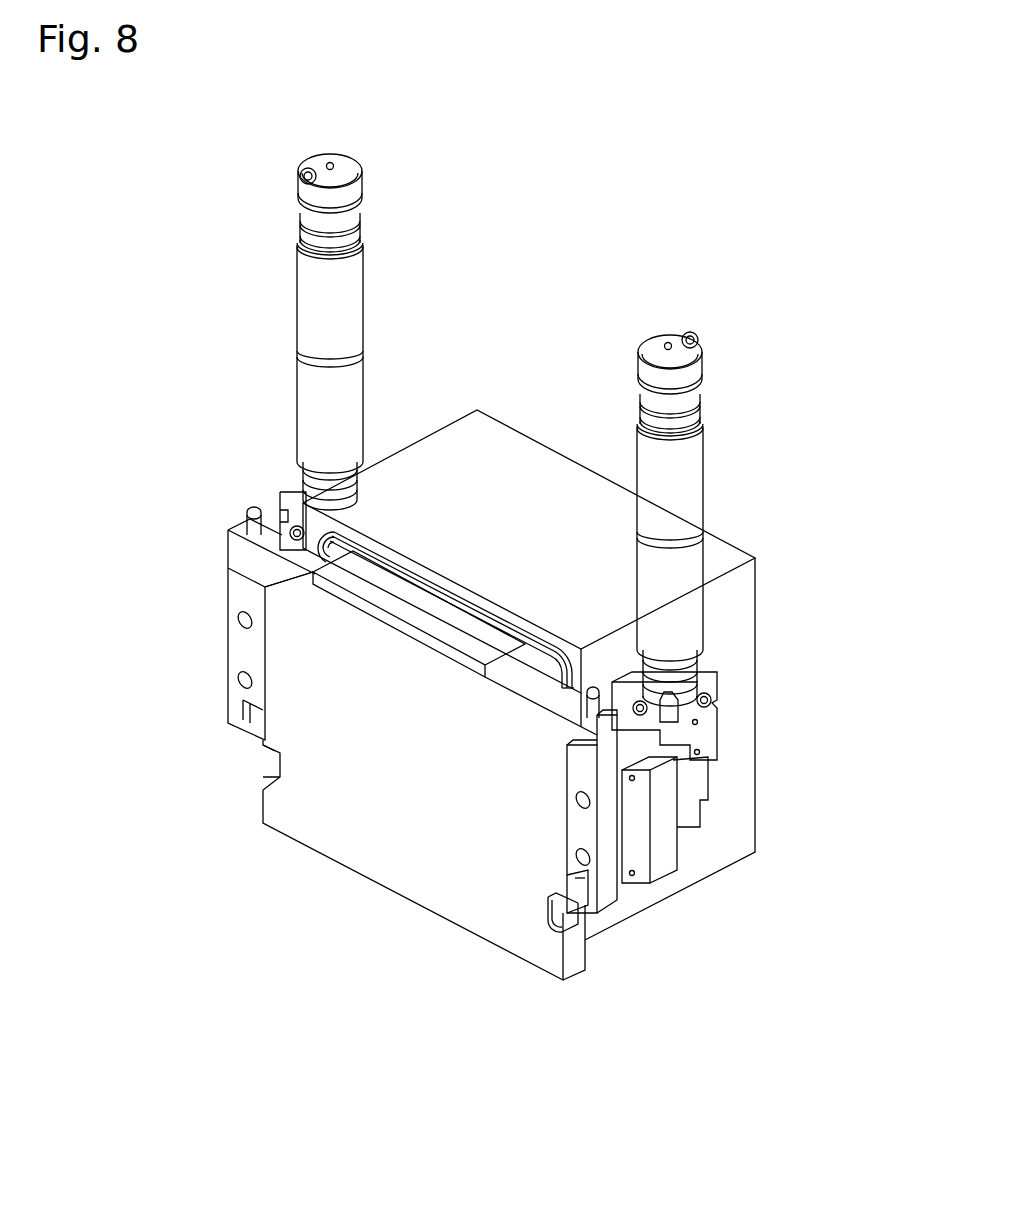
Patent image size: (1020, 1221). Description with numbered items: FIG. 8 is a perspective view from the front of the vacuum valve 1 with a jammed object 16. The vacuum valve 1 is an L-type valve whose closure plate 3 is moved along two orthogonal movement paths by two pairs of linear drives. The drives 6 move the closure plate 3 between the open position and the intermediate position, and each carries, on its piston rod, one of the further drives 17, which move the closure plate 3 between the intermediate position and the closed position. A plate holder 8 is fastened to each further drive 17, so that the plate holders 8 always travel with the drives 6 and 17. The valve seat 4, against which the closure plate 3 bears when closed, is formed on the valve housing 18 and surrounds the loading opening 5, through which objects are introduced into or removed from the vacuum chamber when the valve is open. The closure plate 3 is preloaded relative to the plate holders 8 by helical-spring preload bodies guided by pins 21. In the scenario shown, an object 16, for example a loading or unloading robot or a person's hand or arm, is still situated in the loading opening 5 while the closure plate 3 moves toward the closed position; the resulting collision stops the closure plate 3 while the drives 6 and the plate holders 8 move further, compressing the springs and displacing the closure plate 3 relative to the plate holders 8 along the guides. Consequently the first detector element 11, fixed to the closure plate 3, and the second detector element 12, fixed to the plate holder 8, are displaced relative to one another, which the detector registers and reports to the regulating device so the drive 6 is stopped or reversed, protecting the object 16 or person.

The vacuum valve 1 is at (522, 354).
The closure plate 3 is at (376, 857).
The valve seat 4 is at (424, 584).
The loading opening 5 is at (548, 665).
The drives 6 is at (325, 325).
The plate holder 8 is at (240, 650).
The first detector element 11 is at (560, 913).
The second detector element 12 is at (581, 877).
The object 16 is at (413, 615).
The further drives 17 is at (654, 832).
The valve housing 18 is at (735, 558).
The pins 21 is at (245, 521).